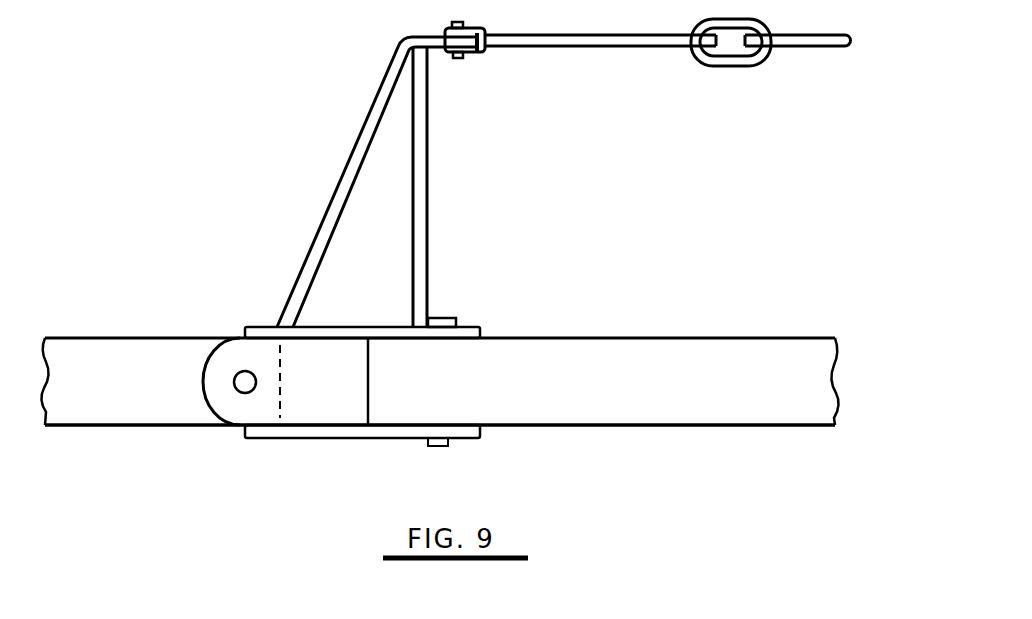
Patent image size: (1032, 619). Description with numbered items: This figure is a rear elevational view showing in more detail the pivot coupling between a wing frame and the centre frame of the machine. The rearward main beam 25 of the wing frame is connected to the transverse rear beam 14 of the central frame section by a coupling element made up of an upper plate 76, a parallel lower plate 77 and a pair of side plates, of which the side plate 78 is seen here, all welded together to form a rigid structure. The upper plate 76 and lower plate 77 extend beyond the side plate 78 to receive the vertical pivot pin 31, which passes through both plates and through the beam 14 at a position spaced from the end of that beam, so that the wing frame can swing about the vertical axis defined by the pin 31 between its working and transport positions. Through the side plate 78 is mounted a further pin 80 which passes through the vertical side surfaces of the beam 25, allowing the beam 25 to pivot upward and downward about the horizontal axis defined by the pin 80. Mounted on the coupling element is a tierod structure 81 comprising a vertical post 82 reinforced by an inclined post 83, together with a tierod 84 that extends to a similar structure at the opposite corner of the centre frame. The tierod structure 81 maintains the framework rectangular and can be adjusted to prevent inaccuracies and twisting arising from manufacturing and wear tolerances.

The transverse rear beam 14 is at (649, 403).
The rearward main beam 25 is at (119, 334).
The pivot pin 31 is at (453, 315).
The upper plate 76 is at (347, 324).
The lower plate 77 is at (380, 441).
The side plate 78 is at (334, 402).
The pin 80 is at (231, 383).
The tierod structure 81 is at (472, 82).
The vertical post 82 is at (428, 185).
The inclined post 83 is at (342, 175).
The tierod 84 is at (622, 51).